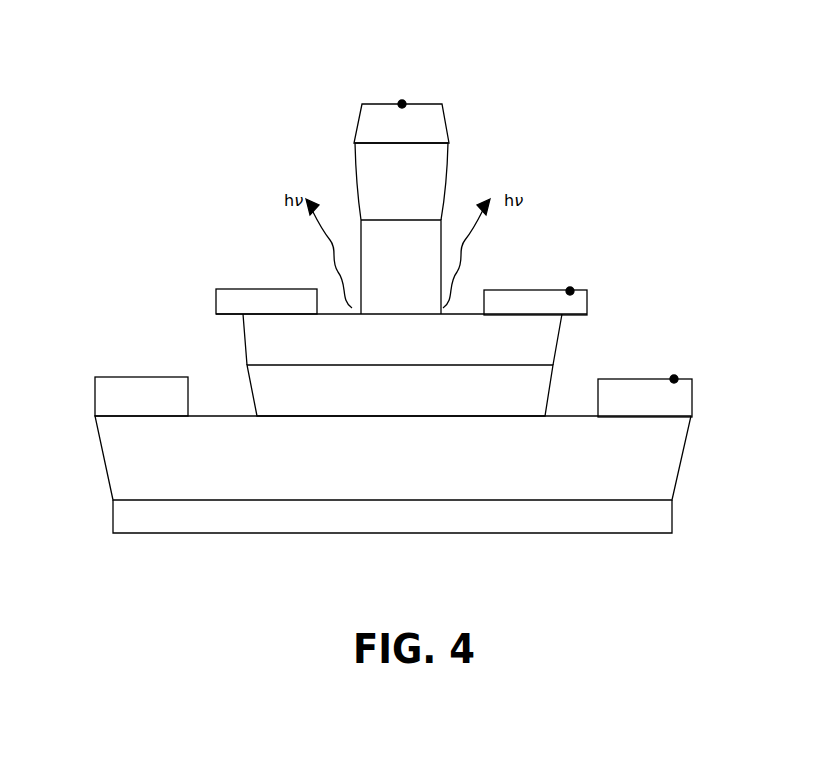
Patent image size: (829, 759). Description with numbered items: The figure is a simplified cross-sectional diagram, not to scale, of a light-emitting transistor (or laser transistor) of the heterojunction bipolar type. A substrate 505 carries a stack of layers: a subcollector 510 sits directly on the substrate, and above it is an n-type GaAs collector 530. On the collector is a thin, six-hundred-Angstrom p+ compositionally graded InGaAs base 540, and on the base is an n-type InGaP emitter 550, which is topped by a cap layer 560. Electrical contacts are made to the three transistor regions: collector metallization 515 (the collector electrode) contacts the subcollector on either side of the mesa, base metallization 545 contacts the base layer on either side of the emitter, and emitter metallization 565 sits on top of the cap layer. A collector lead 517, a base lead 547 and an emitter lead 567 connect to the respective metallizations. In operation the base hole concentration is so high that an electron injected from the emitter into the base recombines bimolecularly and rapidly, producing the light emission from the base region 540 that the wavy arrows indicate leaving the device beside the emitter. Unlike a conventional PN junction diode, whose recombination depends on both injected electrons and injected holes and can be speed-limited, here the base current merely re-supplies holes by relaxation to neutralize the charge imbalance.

The substrate 505 is at (122, 514).
The subcollector 510 is at (122, 457).
The collector metallization 515 is at (105, 394).
The collector lead 517 is at (777, 342).
The n-type GaAs collector 530 is at (265, 387).
The base 540 is at (542, 345).
The base metallization 545 is at (228, 302).
The base lead 547 is at (668, 243).
The n-type InGaP emitter 550 is at (425, 245).
The cap layer 560 is at (377, 175).
The emitter metallization 565 is at (432, 128).
The emitter lead 567 is at (487, 35).